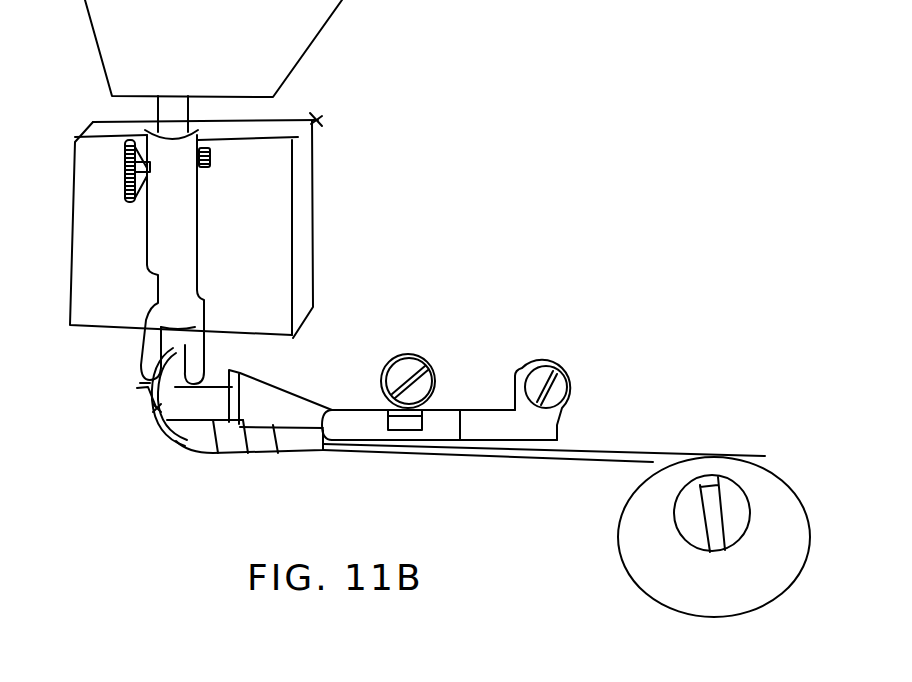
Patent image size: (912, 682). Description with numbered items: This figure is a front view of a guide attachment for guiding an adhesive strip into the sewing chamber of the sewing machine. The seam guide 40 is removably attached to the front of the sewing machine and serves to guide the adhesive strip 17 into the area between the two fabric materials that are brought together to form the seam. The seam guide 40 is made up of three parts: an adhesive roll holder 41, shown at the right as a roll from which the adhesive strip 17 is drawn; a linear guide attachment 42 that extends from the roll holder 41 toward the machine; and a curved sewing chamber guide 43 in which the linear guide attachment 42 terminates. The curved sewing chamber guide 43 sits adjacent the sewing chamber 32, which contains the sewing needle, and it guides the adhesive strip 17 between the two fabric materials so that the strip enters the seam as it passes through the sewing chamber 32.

The sewing chamber 32 is at (183, 235).
The adhesive strip 17 is at (156, 408).
The curved sewing chamber guide 43 is at (195, 430).
The seam guide 40 is at (563, 311).
The linear guide attachment 42 is at (487, 448).
The adhesive roll holder 41 is at (745, 480).